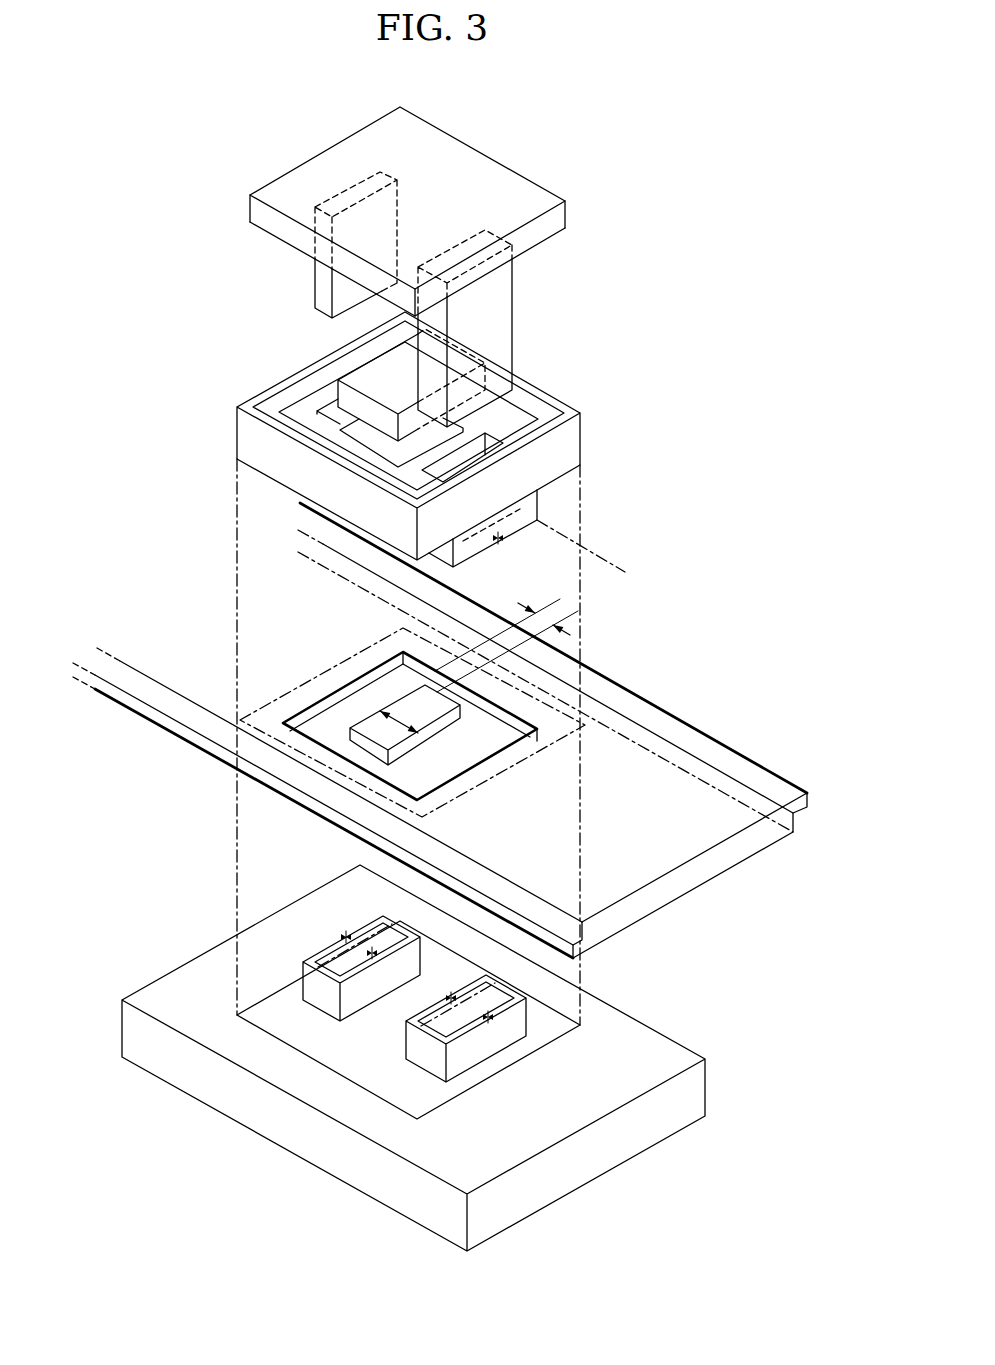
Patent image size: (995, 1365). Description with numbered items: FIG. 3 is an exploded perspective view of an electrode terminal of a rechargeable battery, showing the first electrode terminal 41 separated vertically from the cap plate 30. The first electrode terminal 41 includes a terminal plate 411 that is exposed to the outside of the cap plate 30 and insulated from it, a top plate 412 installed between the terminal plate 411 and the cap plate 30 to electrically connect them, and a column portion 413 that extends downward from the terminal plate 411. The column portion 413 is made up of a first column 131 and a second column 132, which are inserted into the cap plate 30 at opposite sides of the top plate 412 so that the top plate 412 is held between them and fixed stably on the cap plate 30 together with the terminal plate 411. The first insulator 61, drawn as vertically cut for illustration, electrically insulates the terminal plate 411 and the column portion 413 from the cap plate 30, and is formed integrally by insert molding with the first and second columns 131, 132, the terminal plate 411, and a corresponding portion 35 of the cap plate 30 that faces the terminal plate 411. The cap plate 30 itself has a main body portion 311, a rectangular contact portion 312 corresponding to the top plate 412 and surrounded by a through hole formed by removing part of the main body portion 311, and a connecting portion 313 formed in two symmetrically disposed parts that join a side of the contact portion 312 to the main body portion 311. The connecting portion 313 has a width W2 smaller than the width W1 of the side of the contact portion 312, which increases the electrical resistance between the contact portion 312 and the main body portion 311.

The first electrode terminal 41 is at (226, 176).
The terminal plate 411 is at (565, 215).
The column portion 413 is at (225, 262).
The second column 132 is at (317, 277).
The first column 131 is at (427, 373).
The top plate 412 is at (340, 393).
The first insulator 61 is at (580, 440).
The cap plate 30 is at (745, 750).
The main body portion 311 is at (600, 733).
The corresponding portion 35 is at (622, 710).
The connecting portion 313 is at (395, 665).
The contact portion 312 is at (430, 720).
The width of the side of the contact portion W1 is at (432, 718).
The width of the connecting portion W2 is at (506, 636).